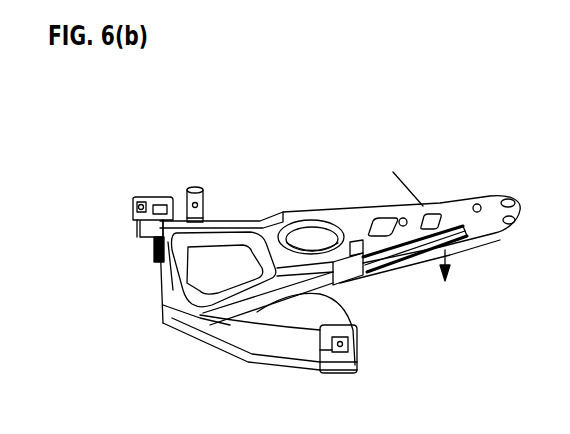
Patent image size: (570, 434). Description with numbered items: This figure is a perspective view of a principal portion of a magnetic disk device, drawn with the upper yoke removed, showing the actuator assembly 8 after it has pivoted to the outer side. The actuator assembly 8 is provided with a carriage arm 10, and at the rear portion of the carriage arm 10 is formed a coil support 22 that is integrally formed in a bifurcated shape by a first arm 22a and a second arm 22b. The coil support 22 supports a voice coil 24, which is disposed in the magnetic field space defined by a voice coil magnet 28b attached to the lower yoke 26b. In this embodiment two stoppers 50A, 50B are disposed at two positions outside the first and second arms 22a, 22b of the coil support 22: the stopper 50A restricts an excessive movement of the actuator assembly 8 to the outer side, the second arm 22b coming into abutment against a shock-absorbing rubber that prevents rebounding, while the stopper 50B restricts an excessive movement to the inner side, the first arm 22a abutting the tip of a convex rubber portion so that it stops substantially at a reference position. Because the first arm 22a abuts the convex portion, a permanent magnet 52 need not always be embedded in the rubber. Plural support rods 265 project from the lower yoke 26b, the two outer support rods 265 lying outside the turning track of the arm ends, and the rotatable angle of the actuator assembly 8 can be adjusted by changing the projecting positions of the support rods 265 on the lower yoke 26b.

The actuator assembly 8 is at (472, 268).
The carriage arm 10 is at (358, 208).
The coil support 22 is at (146, 262).
The first arm 22a is at (192, 328).
The second arm 22b is at (137, 230).
The voice coil 24 is at (245, 218).
The lower yoke 26b is at (284, 350).
The voice coil magnet 28b is at (316, 309).
The stopper 50A is at (131, 214).
The stopper 50B is at (358, 352).
The permanent magnet 52 is at (166, 196).
The support rod 265 is at (138, 196).